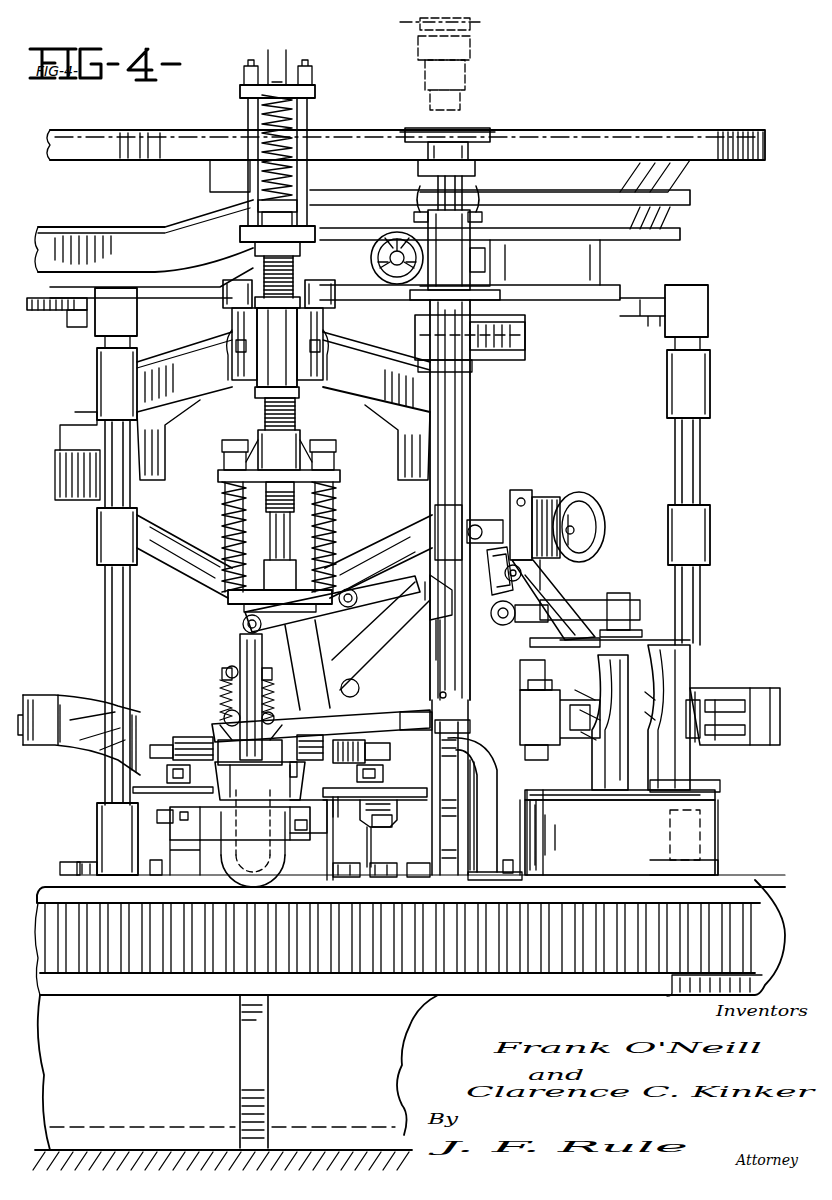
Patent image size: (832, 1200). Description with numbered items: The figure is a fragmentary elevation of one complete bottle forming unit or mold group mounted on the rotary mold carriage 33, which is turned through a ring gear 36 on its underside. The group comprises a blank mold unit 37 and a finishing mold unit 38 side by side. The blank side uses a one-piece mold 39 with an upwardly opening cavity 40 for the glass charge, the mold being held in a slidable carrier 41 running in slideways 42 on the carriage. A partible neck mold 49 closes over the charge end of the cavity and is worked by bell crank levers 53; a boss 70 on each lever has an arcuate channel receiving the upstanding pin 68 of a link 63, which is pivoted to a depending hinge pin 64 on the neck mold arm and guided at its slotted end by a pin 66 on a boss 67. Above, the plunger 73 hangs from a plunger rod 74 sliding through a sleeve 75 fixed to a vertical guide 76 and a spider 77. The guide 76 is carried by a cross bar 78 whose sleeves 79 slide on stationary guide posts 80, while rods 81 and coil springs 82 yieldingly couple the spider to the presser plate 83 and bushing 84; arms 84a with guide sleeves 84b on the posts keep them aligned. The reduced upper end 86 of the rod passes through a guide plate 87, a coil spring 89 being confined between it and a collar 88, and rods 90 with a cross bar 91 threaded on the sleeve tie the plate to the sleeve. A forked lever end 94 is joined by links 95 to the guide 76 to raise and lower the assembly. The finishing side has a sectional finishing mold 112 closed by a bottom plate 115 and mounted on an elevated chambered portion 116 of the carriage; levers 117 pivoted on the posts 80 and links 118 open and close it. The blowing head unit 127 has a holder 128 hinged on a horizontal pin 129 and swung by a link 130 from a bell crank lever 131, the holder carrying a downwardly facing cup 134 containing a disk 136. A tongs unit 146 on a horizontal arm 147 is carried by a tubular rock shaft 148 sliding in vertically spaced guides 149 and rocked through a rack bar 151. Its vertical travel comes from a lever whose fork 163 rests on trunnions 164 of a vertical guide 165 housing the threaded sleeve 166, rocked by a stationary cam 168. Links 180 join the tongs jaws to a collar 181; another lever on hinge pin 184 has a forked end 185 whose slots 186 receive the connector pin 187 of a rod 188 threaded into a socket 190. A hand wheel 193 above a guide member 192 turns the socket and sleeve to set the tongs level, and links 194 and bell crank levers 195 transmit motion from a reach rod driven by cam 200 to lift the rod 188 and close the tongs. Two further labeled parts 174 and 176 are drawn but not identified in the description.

The rotary mold carriage 33 is at (738, 886).
The ring gear 36 is at (753, 944).
The blank mold unit 37 is at (202, 716).
The finishing mold unit 38 is at (706, 636).
The one-piece mold 39 is at (232, 884).
The cavity 40 is at (248, 826).
The carrier 41 is at (210, 848).
The slideways 42 is at (326, 856).
The partible neck mold 49 is at (184, 734).
The bell crank levers 53 is at (380, 738).
The links 63 is at (395, 810).
The hinge pins 64 is at (334, 798).
The pins 66 is at (385, 788).
The bosses 67 is at (166, 826).
The upstanding pin 68 is at (168, 775).
The boss 70 is at (189, 768).
The plunger 73 is at (295, 657).
The plunger rod 74 is at (274, 526).
The sleeve 75 is at (292, 422).
The vertical guide 76 is at (272, 322).
The spider 77 is at (269, 450).
The cross bar 78 is at (190, 392).
The vertical sleeves 79 is at (100, 392).
The vertical guide posts 80 is at (107, 620).
The rods 81 is at (222, 490).
The coil springs 82 is at (218, 508).
The presser plate 83 is at (232, 598).
The bushing 84 is at (248, 606).
The arms 84a is at (160, 560).
The vertical guide sleeves 84b is at (98, 556).
The reduced upper end 86 is at (288, 72).
The guide plate 87 is at (310, 88).
The collar 88 is at (284, 198).
The coil spring 89 is at (294, 110).
The rods 90 is at (308, 118).
The cross bar 91 is at (294, 248).
The forked outer end 94 is at (228, 280).
The links 95 is at (326, 324).
The sectional finishing mold 112 is at (580, 677).
The bottom plate 115 is at (614, 792).
The elevated chambered portion 116 is at (718, 832).
The levers 117 is at (92, 682).
The links 118 is at (560, 734).
The blowing head unit 127 is at (570, 594).
The pivoted holder 128 is at (508, 502).
The horizontal hinge pin 129 is at (540, 666).
The link 130 is at (504, 628).
The bell crank lever 131 is at (494, 594).
The downwardly facing cup 134 is at (594, 504).
The disk 136 is at (586, 532).
The tongs unit 146 is at (260, 781).
The horizontal arm 147 is at (394, 709).
The tubular rock shaft 148 is at (458, 434).
The guides 149 is at (470, 370).
The horizontal rack bar 151 is at (526, 342).
The fork 163 is at (314, 618).
The trunnions 164 is at (484, 258).
The vertical guide 165 is at (482, 282).
The internally threaded sleeve 166 is at (474, 226).
The stationary cam 168 is at (643, 240).
The handwheel 174 is at (380, 234).
The hub 176 is at (370, 270).
The links 180 is at (222, 680).
The collar 181 is at (246, 640).
The horizontal hinge pin 184 is at (356, 628).
The forked inner end 185 is at (382, 622).
The slots 186 is at (436, 586).
The connector pin 187 is at (438, 640).
The rod 188 is at (440, 660).
The socket 190 is at (474, 182).
The guide member 192 is at (482, 70).
The hand wheel 193 is at (476, 28).
The links 194 is at (480, 52).
The bell crank levers 195 is at (420, 214).
The cam 200 is at (614, 144).